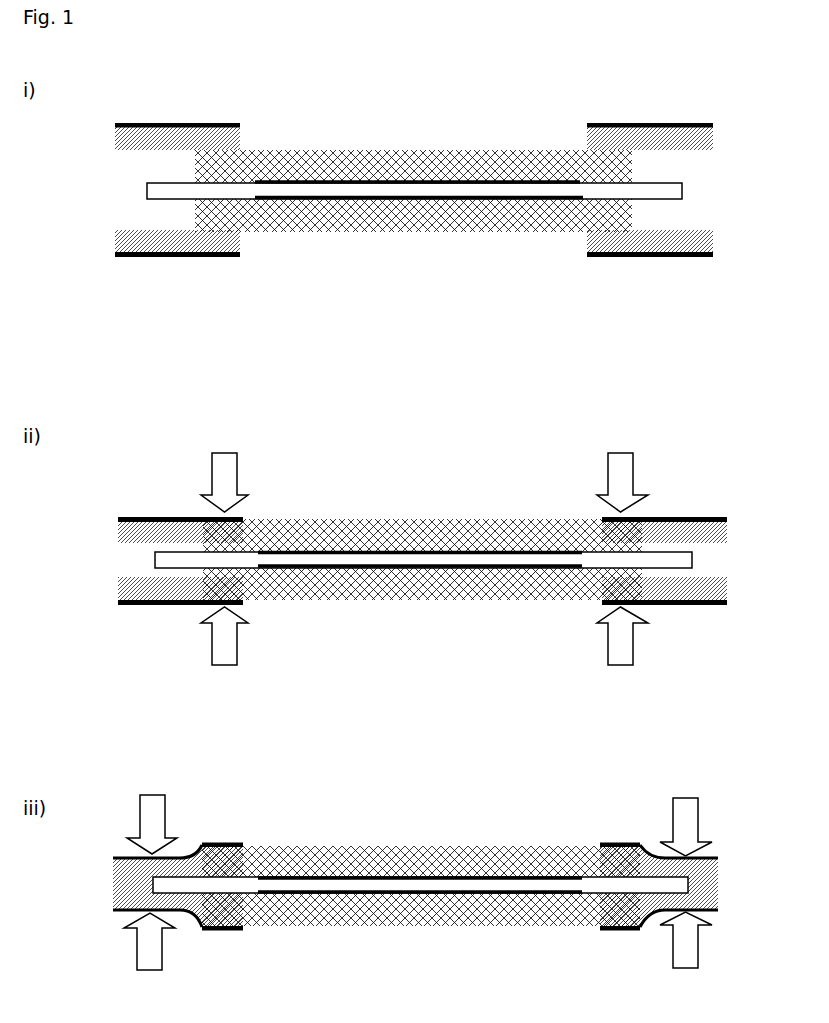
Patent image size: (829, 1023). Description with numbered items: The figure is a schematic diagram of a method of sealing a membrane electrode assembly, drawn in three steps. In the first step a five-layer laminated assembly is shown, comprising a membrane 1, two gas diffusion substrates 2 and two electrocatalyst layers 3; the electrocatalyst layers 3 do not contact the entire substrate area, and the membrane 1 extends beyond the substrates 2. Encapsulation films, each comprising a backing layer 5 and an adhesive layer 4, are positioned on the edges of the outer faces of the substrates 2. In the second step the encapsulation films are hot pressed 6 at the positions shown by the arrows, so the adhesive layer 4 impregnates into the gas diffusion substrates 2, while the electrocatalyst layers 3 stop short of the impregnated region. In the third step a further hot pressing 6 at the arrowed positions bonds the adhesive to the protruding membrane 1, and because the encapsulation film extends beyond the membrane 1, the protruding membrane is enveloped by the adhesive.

The membrane 1 is at (470, 188).
The gas diffusion substrates 2 is at (438, 170).
The electrocatalyst layers 3 is at (565, 188).
The adhesive layer 4 is at (170, 140).
The backing layer 5 is at (110, 132).
The hot pressing 6 is at (418, 718).